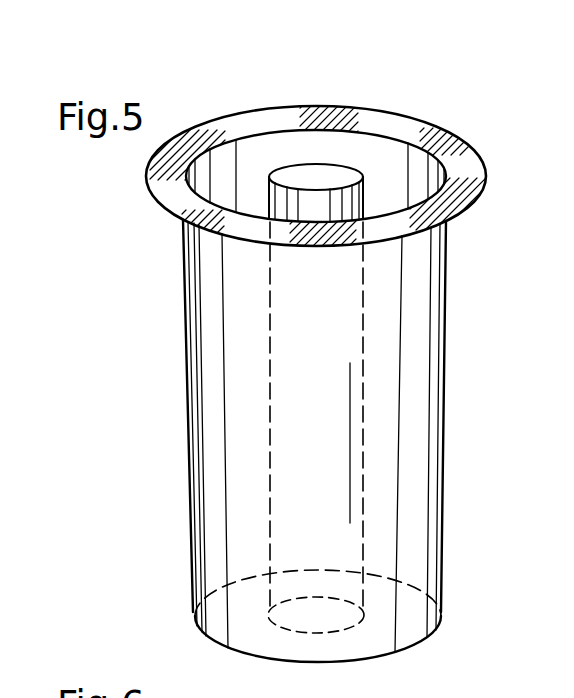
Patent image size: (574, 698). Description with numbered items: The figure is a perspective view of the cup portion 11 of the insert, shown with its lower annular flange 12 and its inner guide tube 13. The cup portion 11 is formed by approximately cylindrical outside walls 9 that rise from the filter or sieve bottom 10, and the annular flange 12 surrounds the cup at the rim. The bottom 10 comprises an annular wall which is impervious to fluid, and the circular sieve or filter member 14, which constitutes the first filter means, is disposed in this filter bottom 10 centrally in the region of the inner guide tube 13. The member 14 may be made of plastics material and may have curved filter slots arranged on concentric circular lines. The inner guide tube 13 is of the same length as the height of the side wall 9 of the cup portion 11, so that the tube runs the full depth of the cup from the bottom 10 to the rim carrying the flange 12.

The outside walls 9 is at (211, 415).
The filter or sieve bottom 10 is at (217, 621).
The cup portion 11 is at (449, 391).
The lower annular flange 12 is at (168, 183).
The inner guide tube 13 is at (365, 195).
The circular sieve or filter member 14 is at (353, 621).